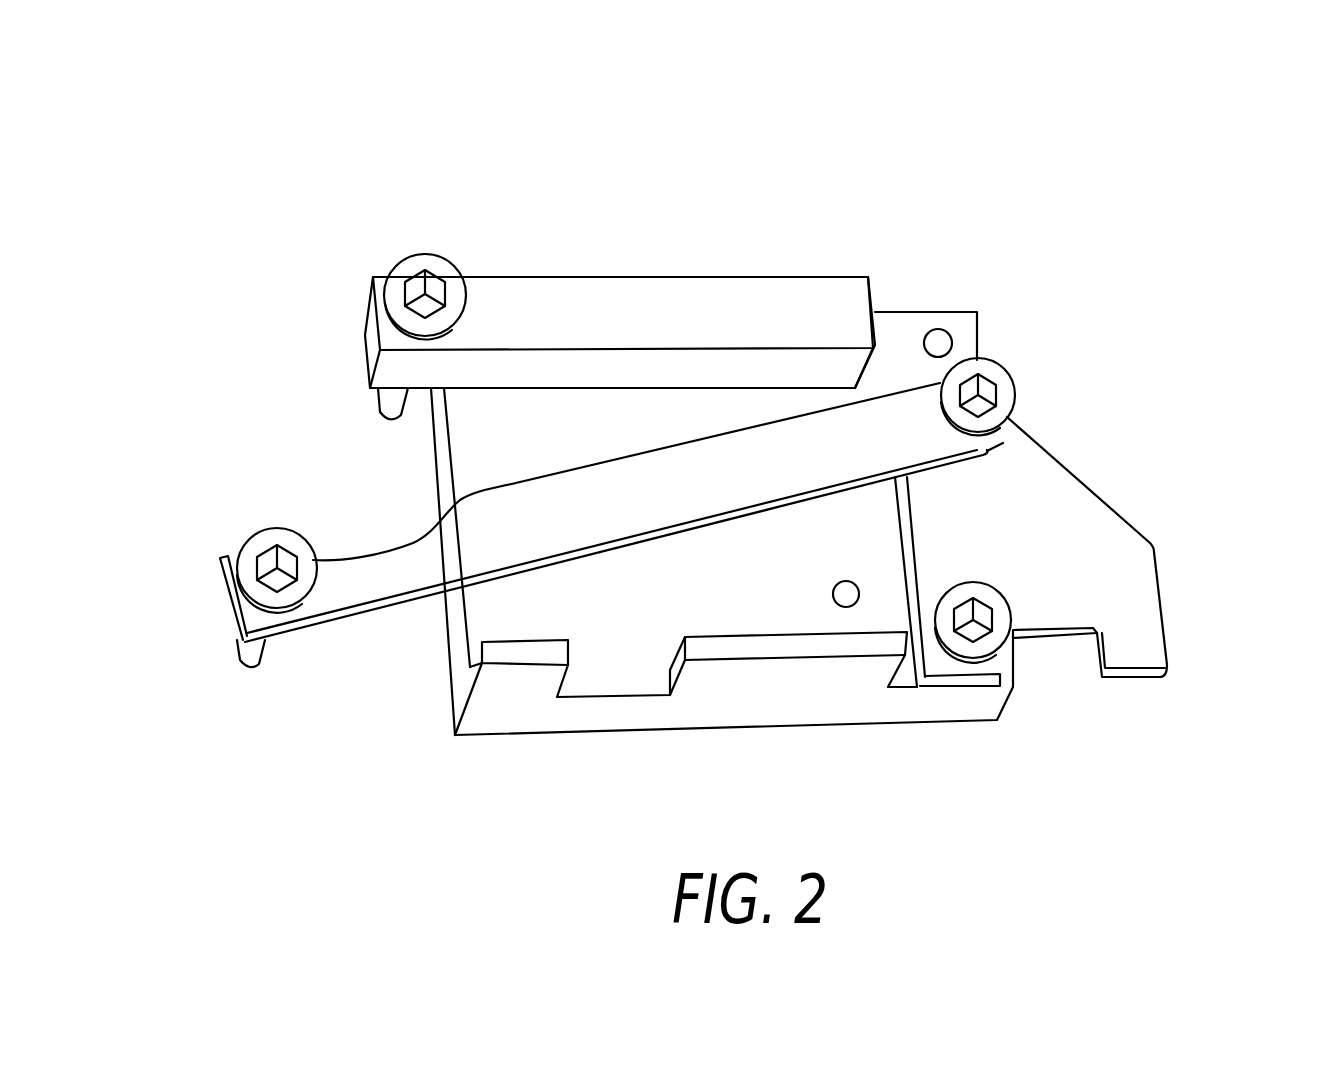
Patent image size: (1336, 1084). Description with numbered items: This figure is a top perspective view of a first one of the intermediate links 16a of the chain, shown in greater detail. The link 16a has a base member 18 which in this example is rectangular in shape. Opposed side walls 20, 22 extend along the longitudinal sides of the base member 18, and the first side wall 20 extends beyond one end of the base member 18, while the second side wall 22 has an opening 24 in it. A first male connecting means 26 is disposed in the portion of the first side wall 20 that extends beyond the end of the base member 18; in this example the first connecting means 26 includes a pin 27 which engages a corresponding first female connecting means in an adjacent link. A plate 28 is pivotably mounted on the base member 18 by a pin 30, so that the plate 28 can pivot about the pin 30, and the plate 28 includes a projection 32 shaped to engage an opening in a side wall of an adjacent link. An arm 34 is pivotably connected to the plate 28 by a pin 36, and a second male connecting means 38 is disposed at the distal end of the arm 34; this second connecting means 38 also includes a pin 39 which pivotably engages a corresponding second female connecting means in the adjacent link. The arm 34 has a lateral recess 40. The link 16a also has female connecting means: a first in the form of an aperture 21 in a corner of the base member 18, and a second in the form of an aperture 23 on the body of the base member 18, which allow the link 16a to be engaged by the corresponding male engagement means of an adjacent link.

The intermediate link 16a is at (478, 122).
The base member 18 is at (707, 498).
The first side wall 20 is at (686, 305).
The aperture 21 is at (940, 330).
The second side wall 22 is at (871, 702).
The aperture 23 is at (846, 607).
The opening 24 is at (632, 648).
The first male connecting means 26 is at (422, 252).
The pin 27 is at (385, 408).
The plate 28 is at (1045, 520).
The pin 30 is at (965, 647).
The projection 32 is at (1135, 650).
The arm 34 is at (608, 500).
The pin 36 is at (997, 372).
The second male connecting means 38 is at (252, 545).
The pin 39 is at (250, 655).
The lateral recess 40 is at (611, 419).